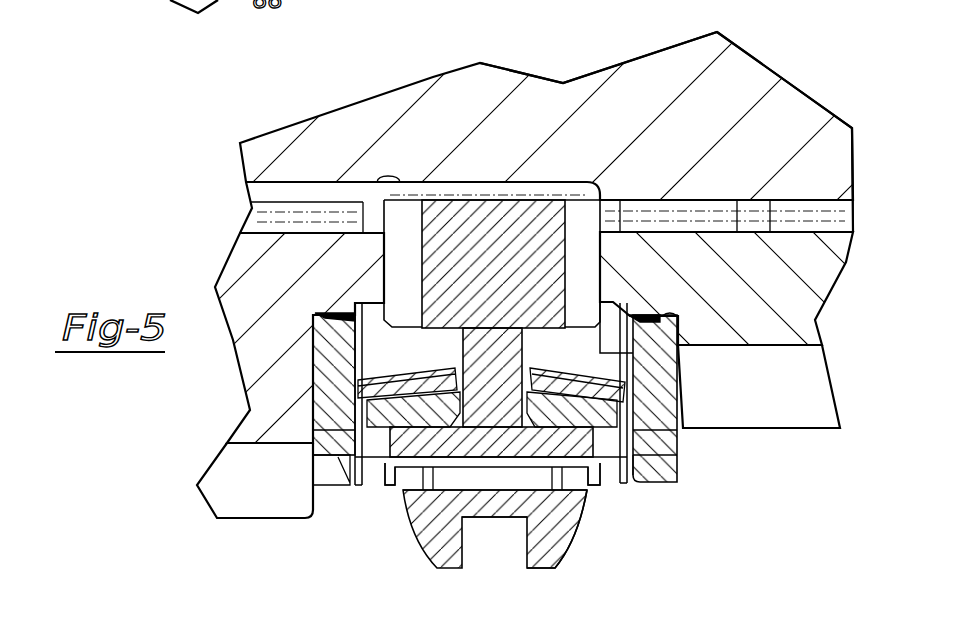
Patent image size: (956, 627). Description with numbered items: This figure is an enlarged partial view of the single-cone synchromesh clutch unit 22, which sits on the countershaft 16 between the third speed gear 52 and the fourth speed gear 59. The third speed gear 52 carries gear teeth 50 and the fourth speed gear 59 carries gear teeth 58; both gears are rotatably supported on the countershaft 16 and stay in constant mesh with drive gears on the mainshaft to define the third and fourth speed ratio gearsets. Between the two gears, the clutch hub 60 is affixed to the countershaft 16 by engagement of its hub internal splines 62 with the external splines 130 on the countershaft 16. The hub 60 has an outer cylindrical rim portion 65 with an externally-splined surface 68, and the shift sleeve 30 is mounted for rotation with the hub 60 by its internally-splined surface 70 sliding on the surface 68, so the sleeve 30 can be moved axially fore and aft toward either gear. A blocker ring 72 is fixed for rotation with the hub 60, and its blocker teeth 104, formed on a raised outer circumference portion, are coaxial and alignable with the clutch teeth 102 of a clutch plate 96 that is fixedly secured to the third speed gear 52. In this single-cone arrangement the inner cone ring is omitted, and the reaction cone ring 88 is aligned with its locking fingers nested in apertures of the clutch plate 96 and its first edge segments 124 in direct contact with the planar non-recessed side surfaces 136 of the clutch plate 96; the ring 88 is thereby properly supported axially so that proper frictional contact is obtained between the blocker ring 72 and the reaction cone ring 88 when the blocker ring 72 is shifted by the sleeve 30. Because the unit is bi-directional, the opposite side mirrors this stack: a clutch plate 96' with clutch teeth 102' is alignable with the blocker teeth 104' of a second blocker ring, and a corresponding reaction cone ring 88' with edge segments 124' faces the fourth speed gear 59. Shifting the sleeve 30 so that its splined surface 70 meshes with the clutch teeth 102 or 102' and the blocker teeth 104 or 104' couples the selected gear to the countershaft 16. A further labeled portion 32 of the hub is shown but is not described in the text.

The countershaft 16 is at (533, 110).
The hub internal splines 62 is at (590, 195).
The third speed gear 52 is at (687, 270).
The external splines 130 is at (470, 185).
The clutch hub 60 is at (425, 182).
The fourth speed gear 59 is at (290, 258).
The gear teeth 58 is at (233, 517).
The gear teeth 50 is at (807, 373).
The single-cone synchromesh clutch unit 22 is at (371, 529).
The internally-splined surface 70 is at (403, 500).
The blocker ring 72 is at (422, 412).
The reaction cone ring 88 is at (639, 462).
The clip 88' is at (306, 401).
The clutch plate 96 is at (733, 398).
The clutch plate 96' is at (246, 340).
The first edge segments 124 is at (719, 407).
The seal 124' is at (236, 290).
The planar non-recessed side surfaces 136 is at (330, 435).
The clutch teeth 102 is at (668, 522).
The clutch teeth 102' is at (217, 500).
The blocker teeth 104 is at (608, 522).
The blocker teeth 104' is at (311, 521).
The shift sleeve 30 is at (425, 488).
The outer cylindrical rim portion 65 is at (545, 455).
The externally-splined surface 68 is at (472, 468).
The notch 32 is at (455, 555).